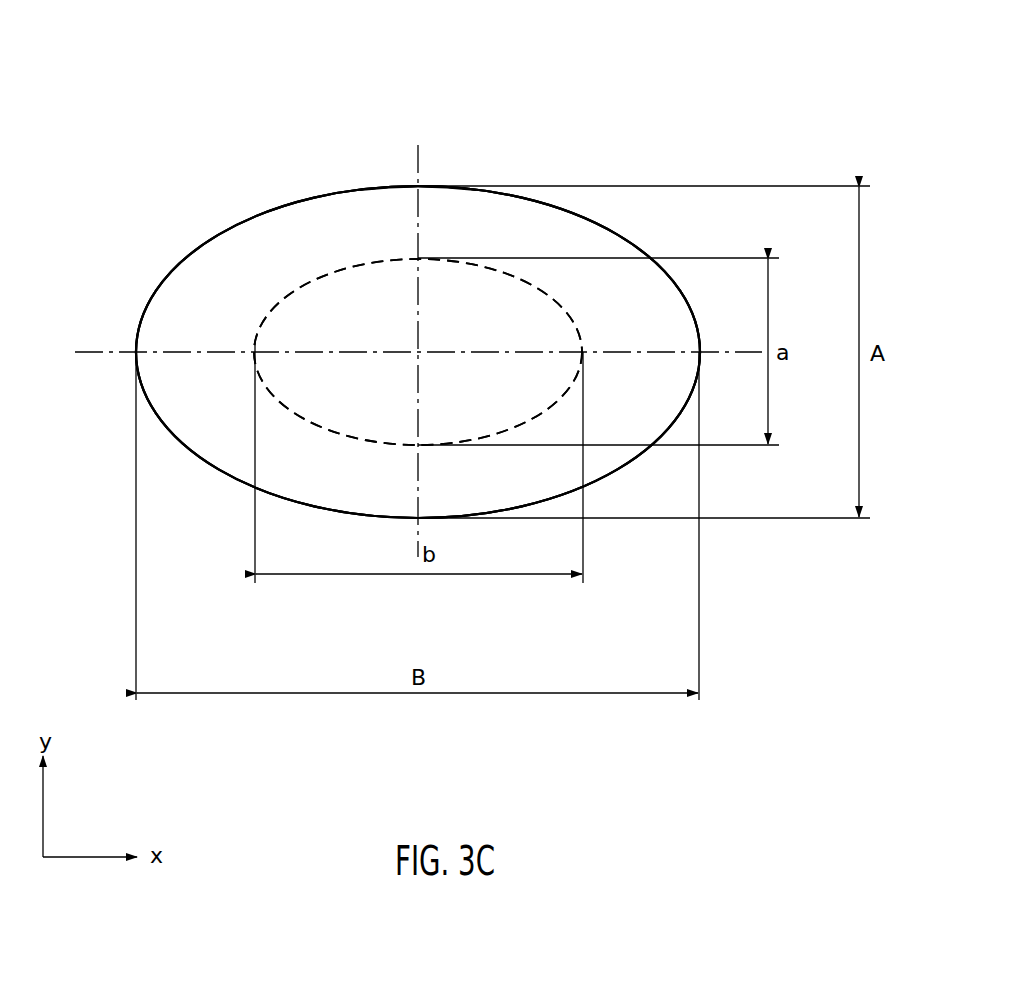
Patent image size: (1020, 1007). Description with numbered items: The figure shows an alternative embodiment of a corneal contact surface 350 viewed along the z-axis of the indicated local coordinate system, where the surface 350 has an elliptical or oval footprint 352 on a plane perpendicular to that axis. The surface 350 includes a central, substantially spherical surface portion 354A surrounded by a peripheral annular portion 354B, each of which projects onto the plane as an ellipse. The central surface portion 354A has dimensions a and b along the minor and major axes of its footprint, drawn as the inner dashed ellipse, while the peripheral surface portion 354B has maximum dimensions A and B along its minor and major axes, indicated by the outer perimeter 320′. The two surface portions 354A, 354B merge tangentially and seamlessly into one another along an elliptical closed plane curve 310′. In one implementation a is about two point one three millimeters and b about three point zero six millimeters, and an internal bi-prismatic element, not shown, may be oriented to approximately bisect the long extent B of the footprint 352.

The corneal contact surface 350 is at (648, 102).
The elliptical or oval footprint 352 is at (648, 102).
The perimeter 320′ is at (210, 237).
The elliptical close plane curve 310′ is at (253, 343).
The central substantially spherical surface portion 354A is at (340, 308).
The peripheral annular portion 354B is at (432, 204).